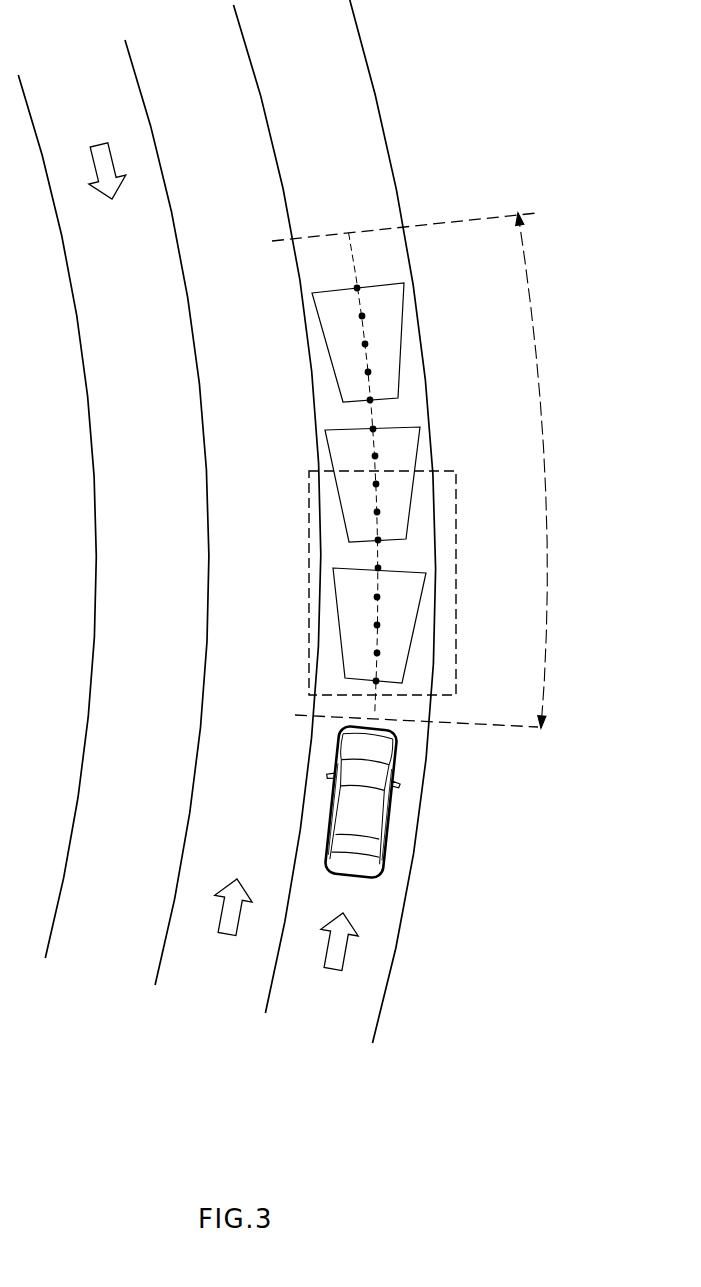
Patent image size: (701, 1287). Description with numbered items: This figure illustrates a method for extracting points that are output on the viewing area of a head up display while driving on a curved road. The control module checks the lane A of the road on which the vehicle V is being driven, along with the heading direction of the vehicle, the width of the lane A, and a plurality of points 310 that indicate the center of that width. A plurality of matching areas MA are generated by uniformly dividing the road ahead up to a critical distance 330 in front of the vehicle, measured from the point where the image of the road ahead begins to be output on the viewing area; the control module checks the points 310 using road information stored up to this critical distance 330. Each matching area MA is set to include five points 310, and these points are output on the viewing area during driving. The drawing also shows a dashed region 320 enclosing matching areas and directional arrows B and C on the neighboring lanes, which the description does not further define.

The points 310 is at (350, 679).
The region of interest box 320 is at (456, 581).
The critical distance 330 is at (547, 470).
The matching area MA is at (335, 591).
The vehicle V is at (395, 820).
The lane A is at (339, 959).
The driving direction of adjacent lane B is at (233, 924).
The driving direction of opposite lane C is at (107, 154).